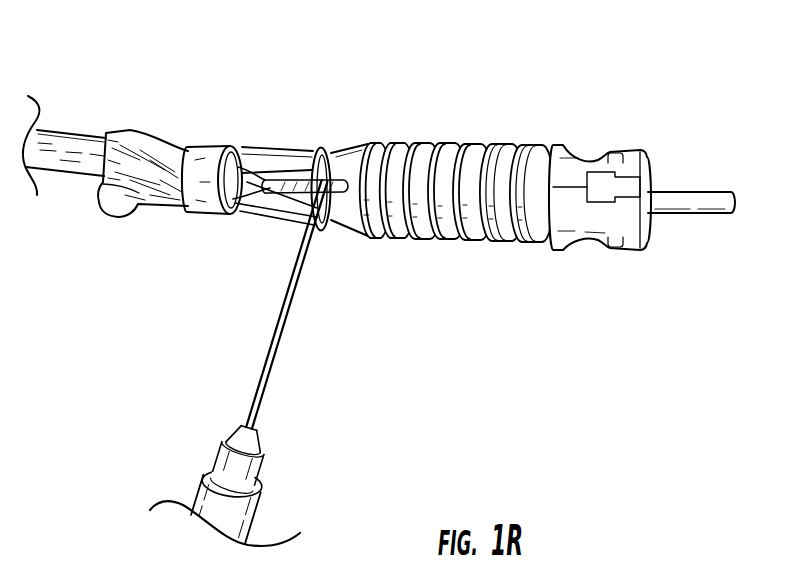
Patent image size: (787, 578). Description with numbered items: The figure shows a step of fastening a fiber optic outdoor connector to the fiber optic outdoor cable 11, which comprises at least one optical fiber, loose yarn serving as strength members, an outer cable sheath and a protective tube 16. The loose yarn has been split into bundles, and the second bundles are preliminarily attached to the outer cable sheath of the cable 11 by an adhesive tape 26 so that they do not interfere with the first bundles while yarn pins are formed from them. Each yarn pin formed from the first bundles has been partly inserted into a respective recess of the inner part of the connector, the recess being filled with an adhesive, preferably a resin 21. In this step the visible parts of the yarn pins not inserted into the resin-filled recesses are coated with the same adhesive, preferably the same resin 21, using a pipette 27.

The fiber optic outdoor cable 11 is at (66, 112).
The adhesive tape 26 is at (205, 167).
The protective tube 16 is at (707, 202).
The pipette 27 is at (282, 479).
The resin 21 is at (190, 497).